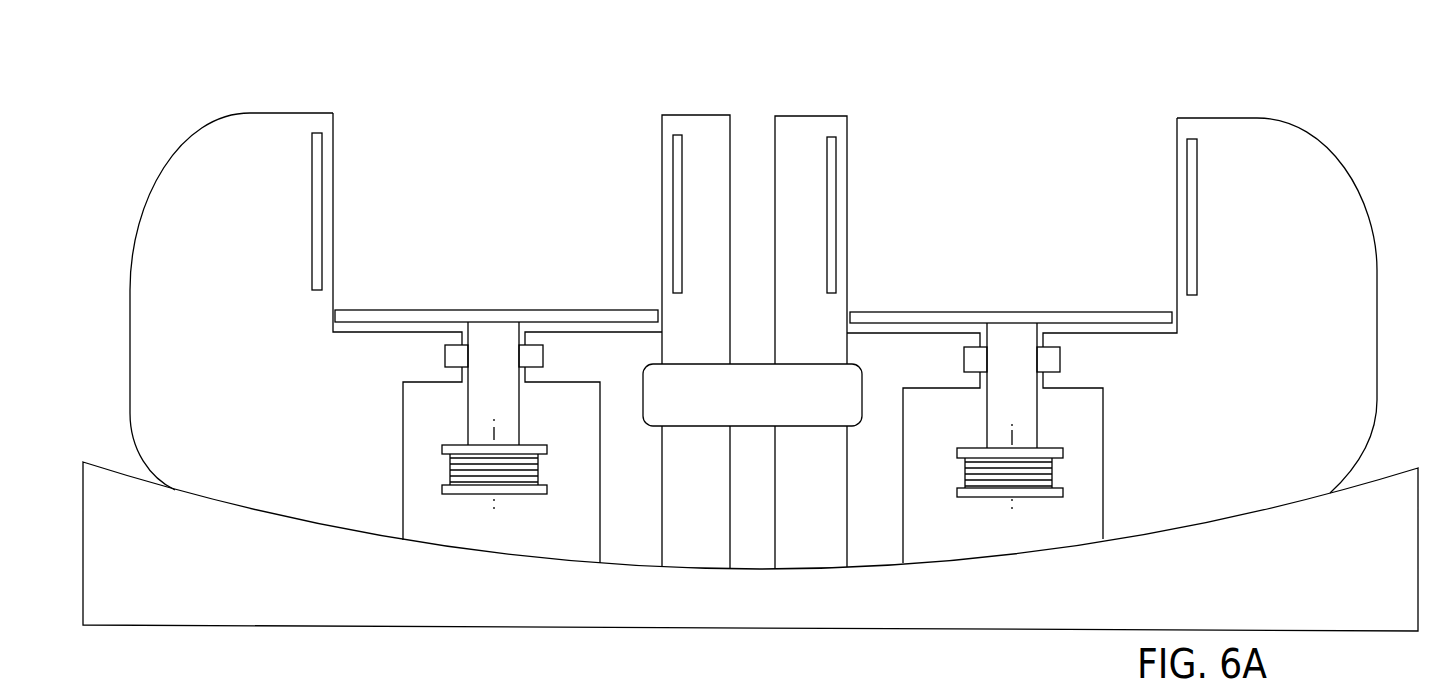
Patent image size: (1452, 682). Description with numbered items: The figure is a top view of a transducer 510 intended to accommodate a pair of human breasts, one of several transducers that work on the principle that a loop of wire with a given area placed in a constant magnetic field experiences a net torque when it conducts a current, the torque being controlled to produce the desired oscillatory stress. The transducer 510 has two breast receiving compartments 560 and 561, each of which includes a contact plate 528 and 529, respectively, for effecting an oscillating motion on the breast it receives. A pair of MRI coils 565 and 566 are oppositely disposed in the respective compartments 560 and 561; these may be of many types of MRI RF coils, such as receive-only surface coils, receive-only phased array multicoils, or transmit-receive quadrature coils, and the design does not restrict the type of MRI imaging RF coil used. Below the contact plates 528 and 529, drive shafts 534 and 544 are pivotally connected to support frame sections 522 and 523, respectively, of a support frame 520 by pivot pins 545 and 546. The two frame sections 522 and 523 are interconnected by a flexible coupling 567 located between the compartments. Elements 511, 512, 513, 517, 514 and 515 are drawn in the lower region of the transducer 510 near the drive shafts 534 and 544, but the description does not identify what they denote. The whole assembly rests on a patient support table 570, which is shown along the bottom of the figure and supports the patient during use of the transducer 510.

The transducer 510 is at (300, 100).
The support frame 520 is at (210, 135).
The support frame section 522 is at (253, 295).
The support frame section 523 is at (1292, 369).
The breast receiving compartment 560 is at (408, 140).
The breast receiving compartment 561 is at (957, 177).
The MRI coil 565 is at (323, 253).
The MRI coil 566 is at (837, 255).
The contact plate 528 is at (420, 309).
The contact plate 529 is at (930, 311).
The pivot pin 545 is at (445, 348).
The pivot pin 546 is at (1060, 353).
The drive shaft 534 is at (475, 388).
The drive shaft 544 is at (1032, 408).
The left spring 511 is at (542, 467).
The left spring seat 512 is at (468, 493).
The right spring 513 is at (965, 472).
The right spring seat 517 is at (1062, 492).
The left axis 514 is at (492, 517).
The right axis 515 is at (1012, 513).
The flexible coupling 567 is at (798, 427).
The patient support table 570 is at (247, 627).